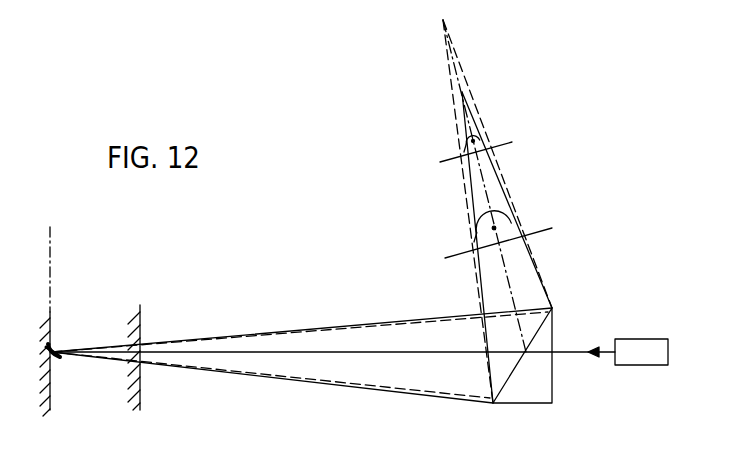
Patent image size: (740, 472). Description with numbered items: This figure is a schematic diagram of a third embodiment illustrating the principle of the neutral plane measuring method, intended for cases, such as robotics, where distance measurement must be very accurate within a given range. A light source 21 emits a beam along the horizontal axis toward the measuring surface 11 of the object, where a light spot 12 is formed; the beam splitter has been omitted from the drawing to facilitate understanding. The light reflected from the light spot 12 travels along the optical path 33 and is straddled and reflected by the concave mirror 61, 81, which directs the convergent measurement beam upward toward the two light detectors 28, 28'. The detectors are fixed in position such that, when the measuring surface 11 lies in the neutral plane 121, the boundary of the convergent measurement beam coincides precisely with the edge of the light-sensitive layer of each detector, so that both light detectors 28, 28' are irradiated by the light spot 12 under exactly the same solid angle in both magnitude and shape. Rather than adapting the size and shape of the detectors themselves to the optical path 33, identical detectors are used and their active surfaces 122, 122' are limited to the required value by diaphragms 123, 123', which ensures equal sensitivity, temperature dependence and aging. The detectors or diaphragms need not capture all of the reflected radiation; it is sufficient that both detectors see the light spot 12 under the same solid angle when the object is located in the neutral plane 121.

The measuring surface 11 is at (47, 320).
The light spot 12 is at (50, 348).
The neutral plane 121 is at (50, 243).
The light source 21 is at (668, 352).
The optical path 33 is at (230, 335).
The concave mirror 61 is at (529, 383).
The concave mirror 81 is at (530, 396).
The light detector 28 is at (515, 243).
The light detector 28' is at (497, 161).
The active surface 122 is at (472, 256).
The active surface 122' is at (449, 175).
The diaphragm 123 is at (521, 245).
The diaphragm 123' is at (508, 150).